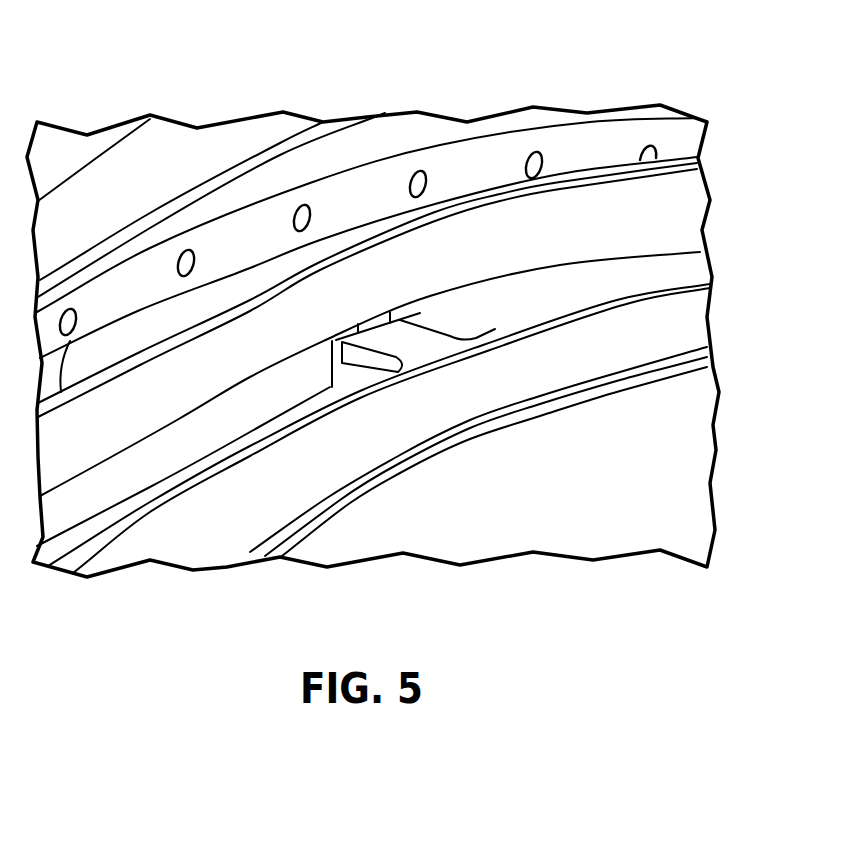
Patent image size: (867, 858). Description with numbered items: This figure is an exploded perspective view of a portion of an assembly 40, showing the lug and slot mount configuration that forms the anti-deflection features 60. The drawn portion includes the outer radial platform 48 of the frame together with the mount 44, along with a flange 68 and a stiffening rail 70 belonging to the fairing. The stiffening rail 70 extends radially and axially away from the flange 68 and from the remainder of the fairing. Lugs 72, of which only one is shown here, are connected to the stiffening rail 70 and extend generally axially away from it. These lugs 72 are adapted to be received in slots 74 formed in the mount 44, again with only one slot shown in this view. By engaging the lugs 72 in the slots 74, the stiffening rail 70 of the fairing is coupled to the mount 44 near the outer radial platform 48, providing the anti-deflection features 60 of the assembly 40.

The assembly 40 is at (125, 103).
The mount 44 is at (671, 225).
The outer radial platform 48 is at (380, 139).
The anti-deflection features 60 is at (481, 388).
The flange 68 is at (252, 550).
The stiffening rail 70 is at (172, 545).
The lugs 72 is at (407, 338).
The slots 74 is at (326, 355).